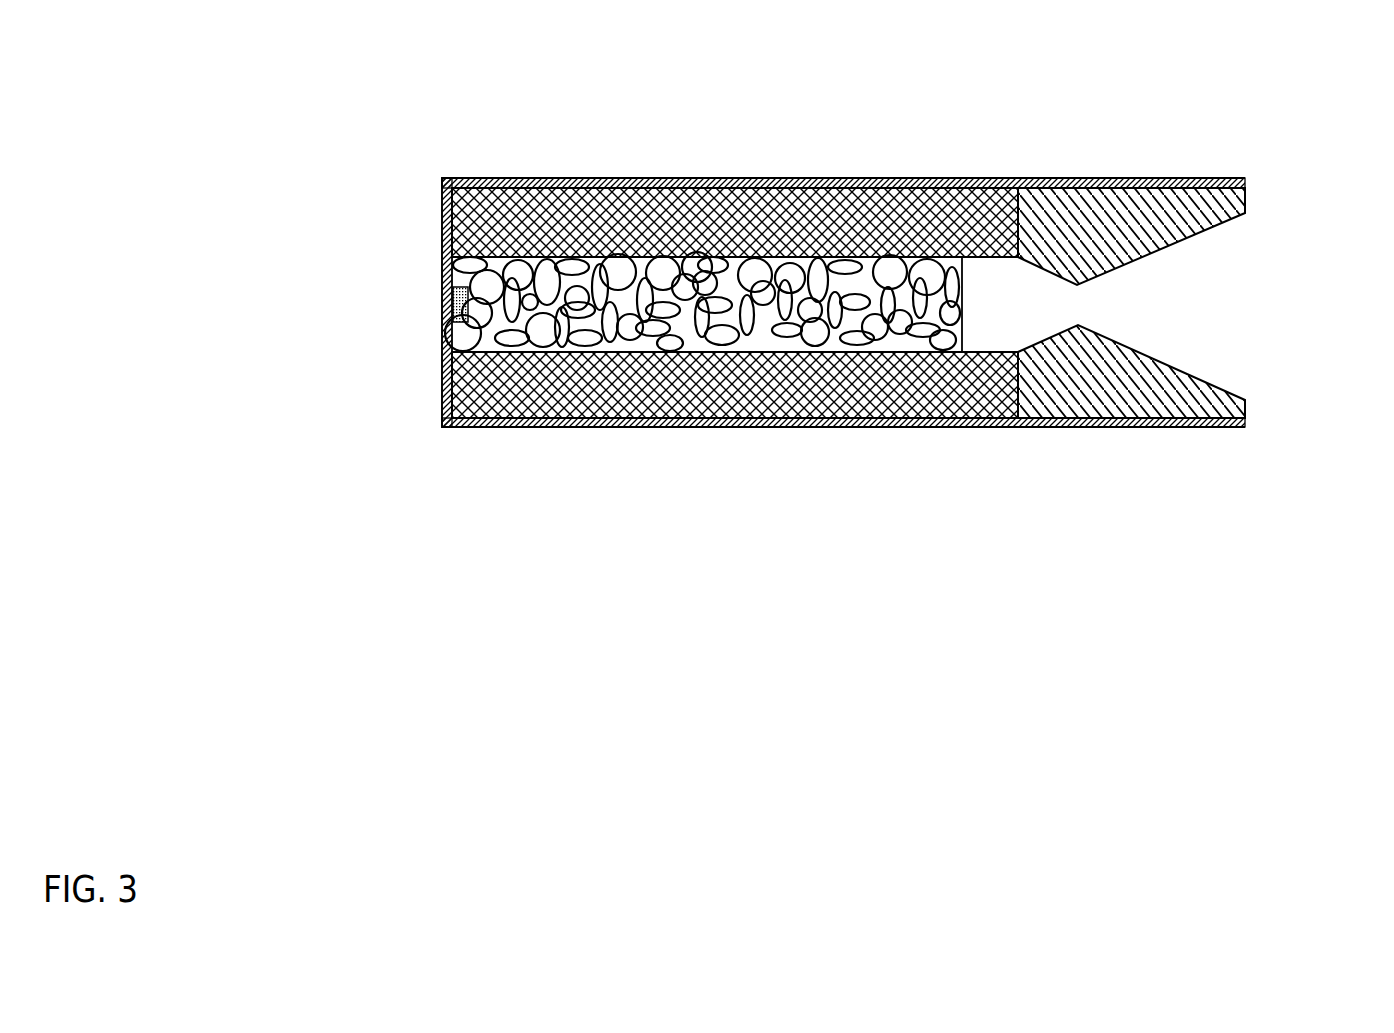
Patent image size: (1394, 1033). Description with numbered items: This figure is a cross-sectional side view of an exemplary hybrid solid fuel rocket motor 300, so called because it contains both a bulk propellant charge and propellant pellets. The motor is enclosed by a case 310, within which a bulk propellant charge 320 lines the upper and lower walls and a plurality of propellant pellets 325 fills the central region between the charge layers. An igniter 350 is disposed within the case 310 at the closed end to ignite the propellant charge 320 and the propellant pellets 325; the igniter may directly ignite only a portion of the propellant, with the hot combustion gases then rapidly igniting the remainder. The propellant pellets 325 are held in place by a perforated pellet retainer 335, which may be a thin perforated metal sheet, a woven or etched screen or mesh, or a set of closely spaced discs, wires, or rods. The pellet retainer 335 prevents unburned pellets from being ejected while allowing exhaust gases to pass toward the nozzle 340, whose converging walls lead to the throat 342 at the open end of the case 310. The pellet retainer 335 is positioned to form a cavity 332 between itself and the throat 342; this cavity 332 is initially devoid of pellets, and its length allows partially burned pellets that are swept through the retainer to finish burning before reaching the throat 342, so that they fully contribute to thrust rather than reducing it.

The solid fuel rocket motor 300 is at (593, 100).
The case 310 is at (1082, 178).
The propellant charge 320 is at (798, 178).
The propellant pellets 325 is at (653, 333).
The cavity 332 is at (998, 305).
The perforated pellet retainer 335 is at (962, 293).
The nozzle 340 is at (1182, 238).
The throat 342 is at (1081, 330).
The igniter 350 is at (442, 303).